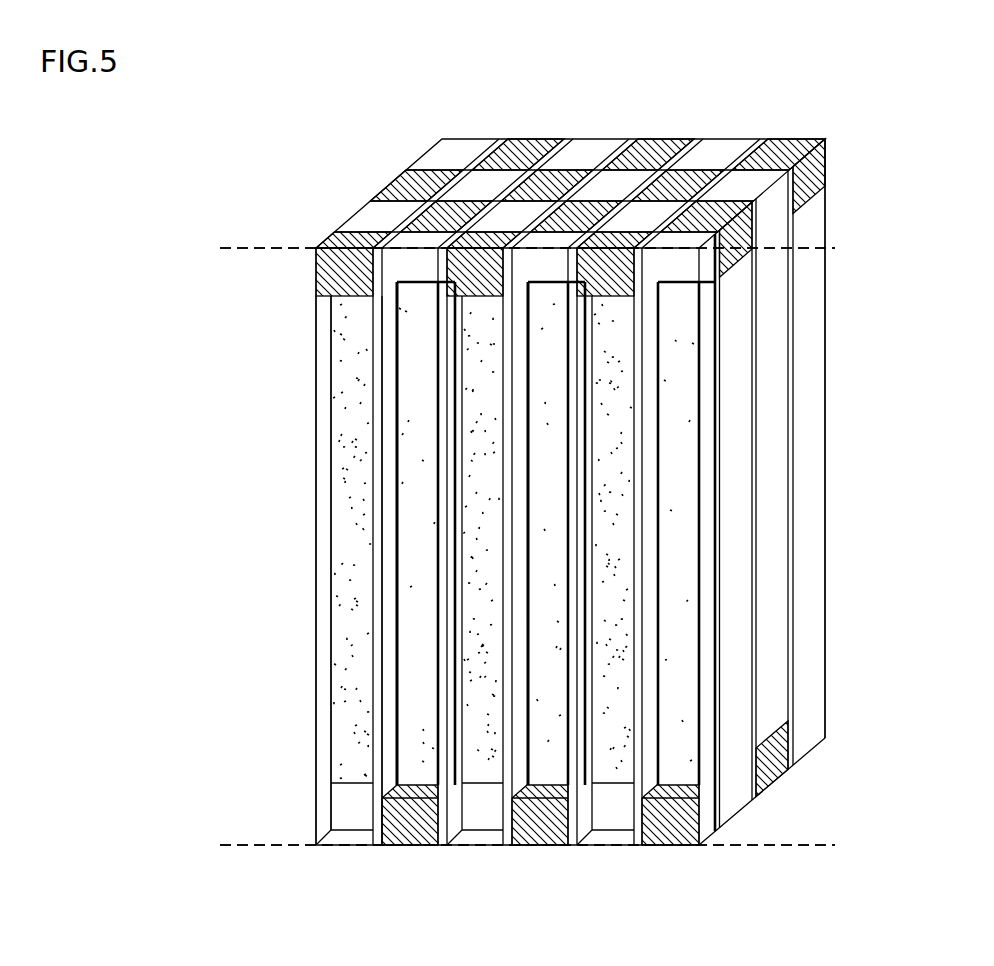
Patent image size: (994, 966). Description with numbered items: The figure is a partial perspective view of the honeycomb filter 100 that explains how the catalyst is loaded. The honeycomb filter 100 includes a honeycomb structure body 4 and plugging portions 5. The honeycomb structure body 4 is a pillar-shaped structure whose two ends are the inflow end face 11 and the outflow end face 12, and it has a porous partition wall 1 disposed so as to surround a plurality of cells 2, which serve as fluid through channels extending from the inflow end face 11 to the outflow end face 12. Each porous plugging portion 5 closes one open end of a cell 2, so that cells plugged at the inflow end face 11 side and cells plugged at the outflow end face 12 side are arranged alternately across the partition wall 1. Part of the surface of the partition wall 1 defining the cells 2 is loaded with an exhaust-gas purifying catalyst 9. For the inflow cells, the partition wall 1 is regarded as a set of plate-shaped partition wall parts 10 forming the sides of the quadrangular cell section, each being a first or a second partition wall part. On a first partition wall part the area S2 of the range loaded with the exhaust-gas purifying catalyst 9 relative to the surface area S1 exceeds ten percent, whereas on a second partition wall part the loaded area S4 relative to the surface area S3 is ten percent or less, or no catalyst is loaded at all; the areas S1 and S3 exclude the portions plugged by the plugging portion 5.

The honeycomb filter 100 is at (907, 47).
The partition wall 1 is at (563, 202).
The cells 2 is at (622, 187).
The honeycomb structure body 4 is at (850, 246).
The plugging portion 5 is at (420, 178).
The exhaust-gas purifying catalyst 9 is at (330, 447).
The partition wall parts 10 is at (400, 350).
The inflow end face 11 is at (372, 155).
The outflow end face 12 is at (306, 856).
The area of the surface of the first partition wall part S1 is at (397, 400).
The area of the range loaded with the exhaust-gas purifying catalyst on the first pa S2 is at (398, 705).
The area of the surface of the second partition wall part S3 is at (535, 612).
The area of the range loaded with the exhaust-gas purifying catalyst on the second p S4 is at (537, 758).